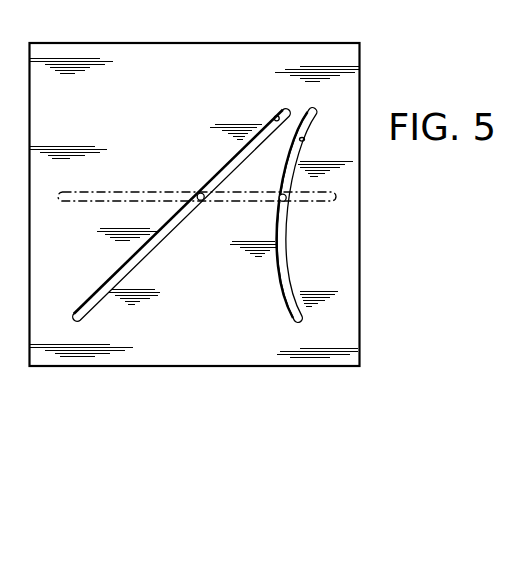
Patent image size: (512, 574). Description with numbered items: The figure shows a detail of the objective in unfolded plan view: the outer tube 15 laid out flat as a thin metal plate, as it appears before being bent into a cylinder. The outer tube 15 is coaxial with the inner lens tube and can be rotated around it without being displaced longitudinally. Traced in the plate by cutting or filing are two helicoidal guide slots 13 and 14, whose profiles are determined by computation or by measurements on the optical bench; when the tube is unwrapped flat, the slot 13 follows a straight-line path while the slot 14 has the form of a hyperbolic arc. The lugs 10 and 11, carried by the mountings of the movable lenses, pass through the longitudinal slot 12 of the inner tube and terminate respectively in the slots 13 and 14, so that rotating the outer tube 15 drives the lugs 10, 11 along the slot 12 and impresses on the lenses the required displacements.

The lug 10 is at (200, 193).
The lug 11 is at (280, 201).
The longitudinal slot 12 is at (129, 191).
The helicoidal guide slot 13 is at (275, 116).
The helicoidal guide slot 14 is at (305, 138).
The outer tube 15 is at (347, 262).